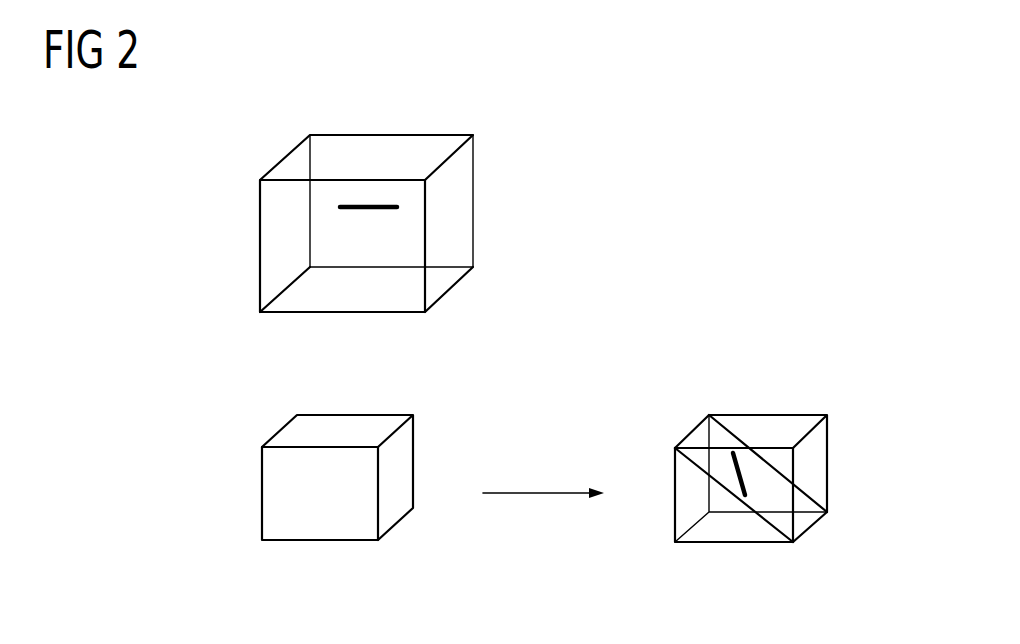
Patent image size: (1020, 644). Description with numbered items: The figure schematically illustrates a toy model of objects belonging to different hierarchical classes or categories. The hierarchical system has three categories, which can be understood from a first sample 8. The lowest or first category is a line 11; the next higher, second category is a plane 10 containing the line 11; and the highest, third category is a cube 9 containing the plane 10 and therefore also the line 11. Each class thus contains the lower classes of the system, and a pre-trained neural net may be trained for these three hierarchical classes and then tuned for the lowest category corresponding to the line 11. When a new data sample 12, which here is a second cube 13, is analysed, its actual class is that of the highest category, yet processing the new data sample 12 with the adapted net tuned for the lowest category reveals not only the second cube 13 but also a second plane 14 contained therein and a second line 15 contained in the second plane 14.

The first sample 8 is at (188, 234).
The cube 9 is at (457, 283).
The plane 10 is at (347, 148).
The line 11 is at (366, 205).
The new data sample 12 is at (188, 460).
The second cube 13 is at (262, 517).
The second plane 14 is at (708, 435).
The second line 15 is at (737, 474).